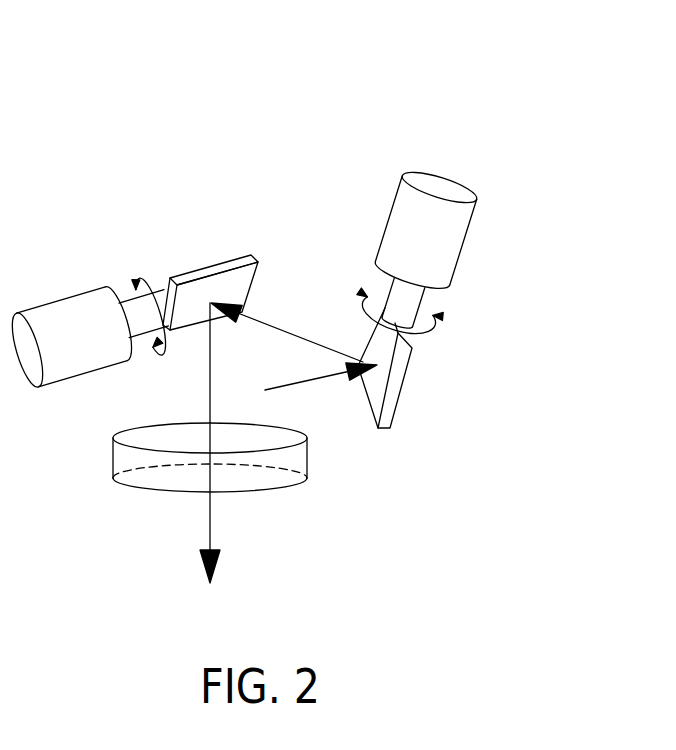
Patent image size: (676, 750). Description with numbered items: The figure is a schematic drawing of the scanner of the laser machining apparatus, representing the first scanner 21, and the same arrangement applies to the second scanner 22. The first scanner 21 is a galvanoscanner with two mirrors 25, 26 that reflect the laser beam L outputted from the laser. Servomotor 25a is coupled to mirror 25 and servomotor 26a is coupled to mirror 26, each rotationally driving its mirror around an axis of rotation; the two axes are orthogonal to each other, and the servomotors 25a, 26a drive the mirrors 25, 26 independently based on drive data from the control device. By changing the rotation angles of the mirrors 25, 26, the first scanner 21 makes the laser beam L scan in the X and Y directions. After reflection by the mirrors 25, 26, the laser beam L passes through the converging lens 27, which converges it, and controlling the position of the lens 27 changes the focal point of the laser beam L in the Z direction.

The first scanner 21 is at (306, 309).
The second scanner 22 is at (534, 130).
The mirror 25 is at (212, 274).
The servomotor 25a is at (58, 303).
The mirror 26 is at (402, 378).
The servomotor 26a is at (465, 237).
The converging lens 27 is at (115, 460).
The laser beam L is at (212, 521).